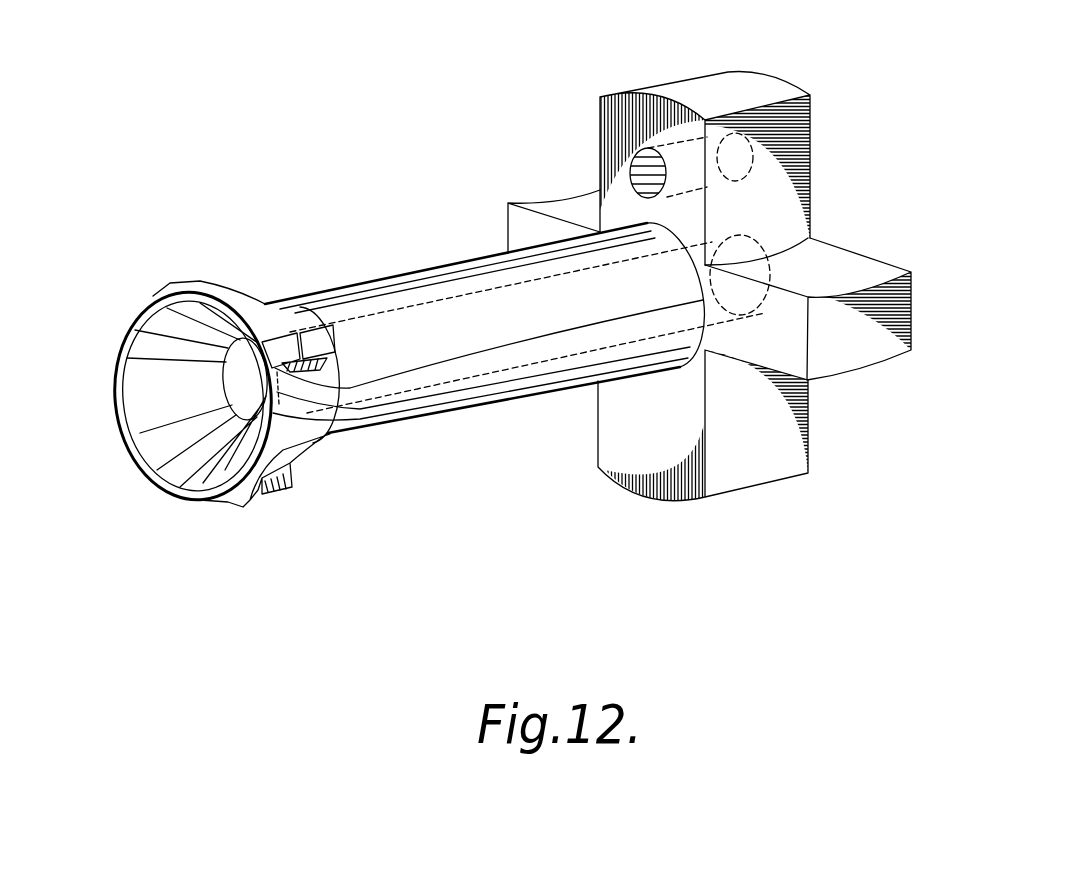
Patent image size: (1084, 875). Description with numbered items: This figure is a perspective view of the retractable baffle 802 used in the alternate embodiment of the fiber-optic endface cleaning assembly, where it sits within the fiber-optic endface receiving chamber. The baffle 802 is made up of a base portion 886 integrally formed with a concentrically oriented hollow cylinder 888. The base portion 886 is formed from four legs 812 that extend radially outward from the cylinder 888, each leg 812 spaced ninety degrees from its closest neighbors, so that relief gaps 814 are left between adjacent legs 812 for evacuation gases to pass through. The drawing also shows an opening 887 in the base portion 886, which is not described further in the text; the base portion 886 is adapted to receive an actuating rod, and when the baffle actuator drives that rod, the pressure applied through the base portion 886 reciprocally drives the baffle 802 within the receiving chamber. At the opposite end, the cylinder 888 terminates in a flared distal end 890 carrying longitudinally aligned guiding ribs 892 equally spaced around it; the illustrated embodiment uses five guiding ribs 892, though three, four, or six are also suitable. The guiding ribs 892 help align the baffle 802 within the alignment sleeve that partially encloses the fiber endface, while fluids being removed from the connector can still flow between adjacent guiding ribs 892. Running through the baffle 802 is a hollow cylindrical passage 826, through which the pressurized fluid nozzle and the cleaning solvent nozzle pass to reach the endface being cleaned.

The retractable baffle 802 is at (318, 253).
The leg 812 is at (617, 113).
The relief gap 814 is at (826, 405).
The hollow cylindrical passage 826 is at (242, 381).
The base portion 886 is at (688, 93).
The hole 887 is at (630, 168).
The hollow cylinder 888 is at (358, 283).
The flared distal end 890 is at (140, 373).
The guiding rib 892 is at (187, 281).